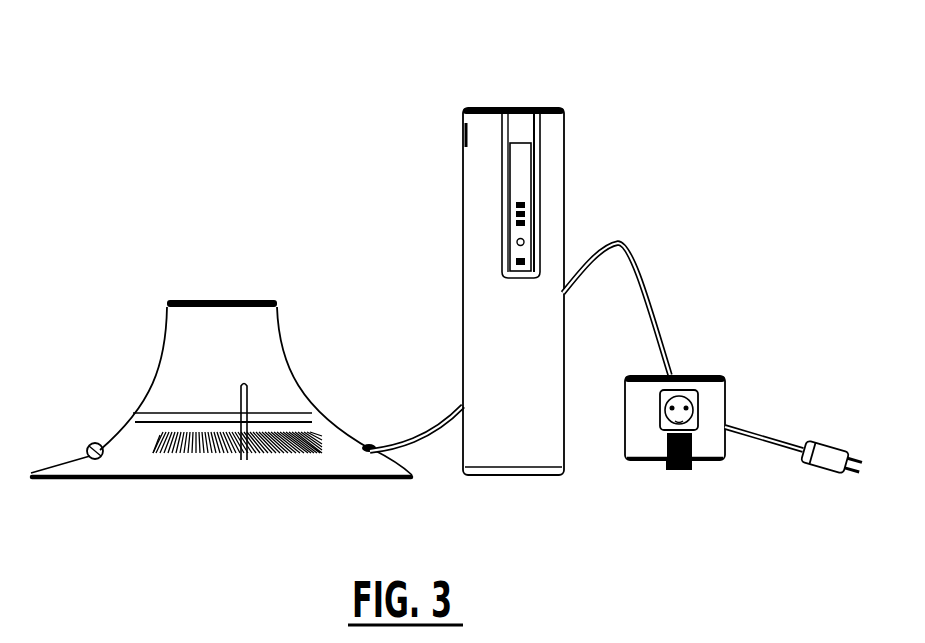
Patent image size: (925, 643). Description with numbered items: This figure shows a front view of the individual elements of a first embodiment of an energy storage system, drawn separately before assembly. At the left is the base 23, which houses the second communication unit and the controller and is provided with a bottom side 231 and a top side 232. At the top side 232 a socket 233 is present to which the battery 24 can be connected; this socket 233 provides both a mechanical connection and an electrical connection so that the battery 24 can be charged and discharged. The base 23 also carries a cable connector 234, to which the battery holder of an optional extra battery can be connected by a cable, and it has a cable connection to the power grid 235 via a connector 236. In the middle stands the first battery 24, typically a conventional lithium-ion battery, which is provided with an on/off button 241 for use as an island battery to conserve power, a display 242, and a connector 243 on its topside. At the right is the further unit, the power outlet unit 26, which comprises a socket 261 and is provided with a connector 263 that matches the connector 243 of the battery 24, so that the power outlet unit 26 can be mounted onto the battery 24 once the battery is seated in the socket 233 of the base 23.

The base 23 is at (158, 378).
The bottom side 231 is at (247, 297).
The top side 232 is at (242, 466).
The socket 233 is at (203, 265).
The cable connector 234 is at (64, 412).
The power grid 235 is at (835, 471).
The connector 236 is at (363, 402).
The first battery 24 is at (598, 165).
The on/off button 241 is at (528, 225).
The display 242 is at (523, 173).
The connector 243 is at (502, 72).
The power outlet unit 26 is at (737, 500).
The socket 261 is at (664, 430).
The connector 263 is at (618, 508).